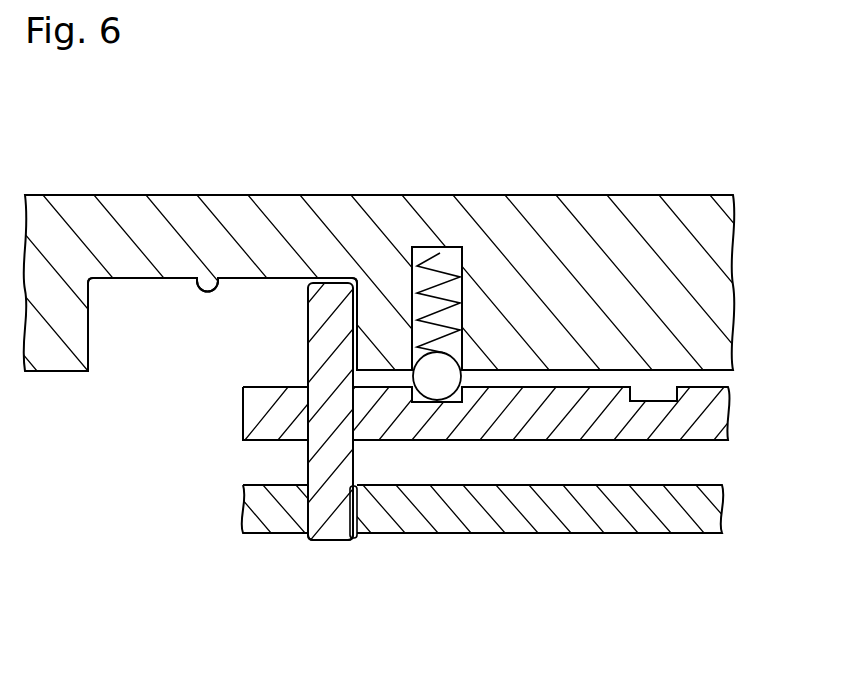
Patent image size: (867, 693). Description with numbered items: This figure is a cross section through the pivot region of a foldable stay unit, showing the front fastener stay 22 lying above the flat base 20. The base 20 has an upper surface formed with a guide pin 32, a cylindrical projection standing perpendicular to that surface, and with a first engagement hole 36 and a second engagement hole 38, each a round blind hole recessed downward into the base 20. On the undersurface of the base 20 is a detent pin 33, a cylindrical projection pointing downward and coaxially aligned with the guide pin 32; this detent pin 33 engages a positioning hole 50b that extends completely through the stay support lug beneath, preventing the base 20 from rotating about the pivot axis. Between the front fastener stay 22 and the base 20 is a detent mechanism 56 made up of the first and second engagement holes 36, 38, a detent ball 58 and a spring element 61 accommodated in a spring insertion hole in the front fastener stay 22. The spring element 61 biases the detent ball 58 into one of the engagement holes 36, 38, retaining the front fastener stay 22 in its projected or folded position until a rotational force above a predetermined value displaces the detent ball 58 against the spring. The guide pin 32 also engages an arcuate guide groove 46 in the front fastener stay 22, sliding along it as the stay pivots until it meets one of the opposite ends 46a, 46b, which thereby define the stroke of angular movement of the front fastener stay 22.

The base 20 is at (727, 422).
The front fastener stay 22 is at (643, 212).
The guide pin 32 is at (318, 345).
The detent pin 33 is at (310, 542).
The first engagement hole 36 is at (432, 392).
The second engagement hole 38 is at (663, 393).
The guide groove 46 is at (218, 278).
The end of guide groove 46a is at (90, 317).
The end of guide groove 46b is at (350, 310).
The positioning hole 50b is at (352, 505).
The detent mechanism 56 is at (473, 373).
The detent ball 58 is at (447, 383).
The spring element 61 is at (427, 255).